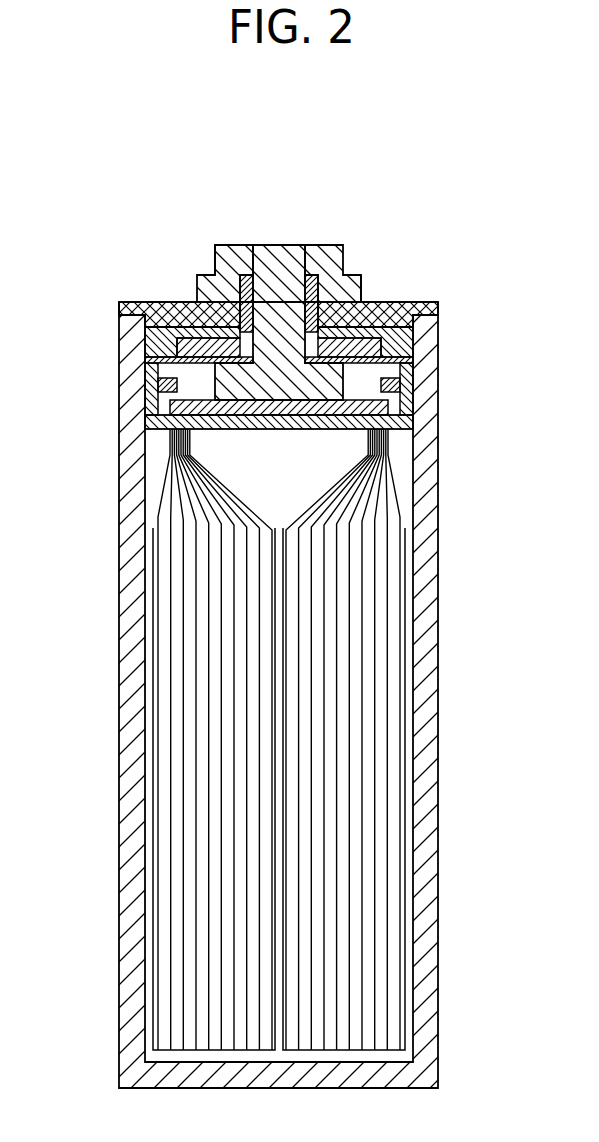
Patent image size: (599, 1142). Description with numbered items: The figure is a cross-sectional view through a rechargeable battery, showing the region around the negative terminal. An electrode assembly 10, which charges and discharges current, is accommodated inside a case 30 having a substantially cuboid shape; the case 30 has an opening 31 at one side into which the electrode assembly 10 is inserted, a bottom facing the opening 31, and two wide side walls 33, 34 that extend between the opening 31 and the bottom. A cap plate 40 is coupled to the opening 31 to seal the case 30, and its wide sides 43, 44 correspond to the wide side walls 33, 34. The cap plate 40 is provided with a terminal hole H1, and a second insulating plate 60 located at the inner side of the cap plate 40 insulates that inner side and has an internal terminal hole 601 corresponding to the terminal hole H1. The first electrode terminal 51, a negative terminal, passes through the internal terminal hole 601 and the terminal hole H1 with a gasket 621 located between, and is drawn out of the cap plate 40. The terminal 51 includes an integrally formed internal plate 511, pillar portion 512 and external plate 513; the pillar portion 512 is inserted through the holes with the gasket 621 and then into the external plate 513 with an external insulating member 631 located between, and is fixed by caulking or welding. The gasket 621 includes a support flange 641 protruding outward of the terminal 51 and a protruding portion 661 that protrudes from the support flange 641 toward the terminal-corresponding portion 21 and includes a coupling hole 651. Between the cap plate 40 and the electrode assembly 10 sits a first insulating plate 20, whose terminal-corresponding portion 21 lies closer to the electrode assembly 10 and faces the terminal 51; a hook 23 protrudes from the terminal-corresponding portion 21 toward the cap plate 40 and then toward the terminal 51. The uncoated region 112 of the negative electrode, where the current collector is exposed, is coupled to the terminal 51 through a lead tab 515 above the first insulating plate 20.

The electrode assembly 10 is at (279, 739).
The uncoated region 112 is at (170, 435).
The first insulating plate 20 is at (271, 429).
The terminal-corresponding portion 21 is at (333, 430).
The hook 23 is at (412, 368).
The case 30 is at (440, 656).
The opening 31 is at (400, 302).
The wide side wall 33 is at (438, 820).
The wide side wall 34 is at (120, 820).
The cap plate 40 is at (167, 302).
The wide side 43 is at (438, 308).
The wide side 44 is at (119, 308).
The first electrode terminal 51 is at (279, 264).
The internal plate 511 is at (240, 275).
The pillar portion 512 is at (268, 385).
The external plate 513 is at (328, 275).
The lead tab 515 is at (165, 397).
The second insulating plate 60 is at (147, 333).
The internal terminal hole 601 is at (148, 357).
The gasket 621 is at (340, 287).
The external insulating member 631 is at (358, 280).
The support flange 641 is at (413, 333).
The coupling hole 651 is at (412, 420).
The protruding portion 661 is at (412, 405).
The terminal hole H1 is at (218, 247).